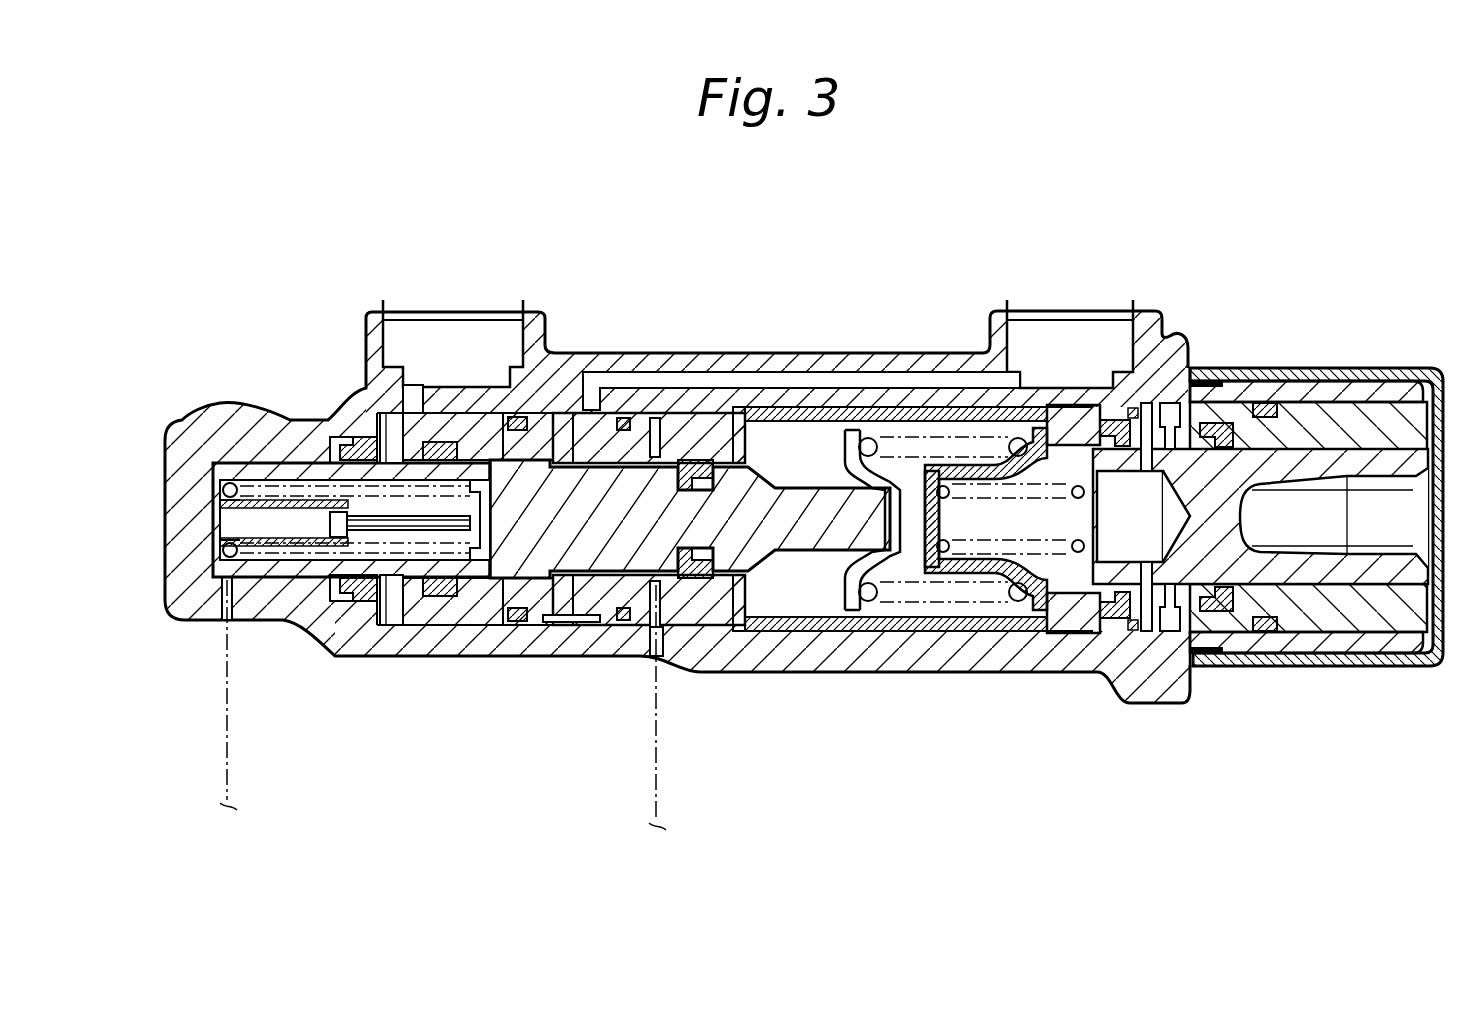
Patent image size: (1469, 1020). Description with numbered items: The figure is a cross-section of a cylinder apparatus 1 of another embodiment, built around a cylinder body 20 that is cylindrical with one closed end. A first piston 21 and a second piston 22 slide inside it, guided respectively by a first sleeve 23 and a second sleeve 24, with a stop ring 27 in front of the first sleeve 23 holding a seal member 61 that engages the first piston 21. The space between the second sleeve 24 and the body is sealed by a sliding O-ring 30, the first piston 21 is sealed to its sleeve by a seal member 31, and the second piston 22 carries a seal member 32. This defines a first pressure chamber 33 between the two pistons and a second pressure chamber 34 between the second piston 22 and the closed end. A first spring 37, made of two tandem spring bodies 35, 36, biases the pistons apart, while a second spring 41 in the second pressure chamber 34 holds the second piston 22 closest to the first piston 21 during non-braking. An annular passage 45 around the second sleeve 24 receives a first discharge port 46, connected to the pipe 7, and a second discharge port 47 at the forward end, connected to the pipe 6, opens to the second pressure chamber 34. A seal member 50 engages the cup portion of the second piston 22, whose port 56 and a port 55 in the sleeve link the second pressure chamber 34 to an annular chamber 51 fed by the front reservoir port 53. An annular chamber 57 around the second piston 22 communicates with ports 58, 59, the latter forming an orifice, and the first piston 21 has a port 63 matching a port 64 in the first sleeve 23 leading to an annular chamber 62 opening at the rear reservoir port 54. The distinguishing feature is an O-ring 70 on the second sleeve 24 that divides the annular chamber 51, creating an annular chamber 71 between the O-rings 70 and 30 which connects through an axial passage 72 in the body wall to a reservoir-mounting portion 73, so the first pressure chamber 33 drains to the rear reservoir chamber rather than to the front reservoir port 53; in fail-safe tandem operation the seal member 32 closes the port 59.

The cylinder apparatus 1 is at (934, 228).
The cylinder body 20 is at (760, 382).
The first piston 21 is at (1303, 457).
The second piston 22 is at (790, 468).
The sleeve 23 is at (1205, 415).
The sleeve 24 is at (485, 612).
The stop ring 27 is at (1057, 402).
The O-ring 30 is at (600, 430).
The seal member 31 is at (1233, 612).
The seal member 32 is at (700, 576).
The first pressure chamber 33 is at (825, 576).
The second pressure chamber 34 is at (273, 566).
The spring body 35 is at (1055, 550).
The spring body 36 is at (985, 602).
The first spring 37 is at (1057, 737).
The second spring 41 is at (270, 490).
The annular passage 45 is at (745, 408).
The first discharge port 46 is at (660, 657).
The second discharge port 47 is at (224, 625).
The seal member 50 is at (355, 420).
The annular chamber 51 is at (455, 410).
The front reservoir port 53 is at (447, 432).
The rear reservoir port 54 is at (1110, 420).
The port 55 is at (400, 600).
The port 56 is at (372, 440).
The annular chamber 57 is at (595, 602).
The port 58 is at (575, 405).
The port 59 is at (655, 418).
The seal member 61 is at (1125, 605).
The annular chamber 62 is at (1135, 420).
The port 63 is at (1147, 602).
The port 64 is at (1172, 608).
The O-ring 70 is at (522, 627).
The annular chamber 71 is at (567, 630).
The axial passage 72 is at (898, 380).
The reservoir-mounting portion 73 is at (1070, 326).
The pipe 6 is at (227, 773).
The pipe 7 is at (656, 790).